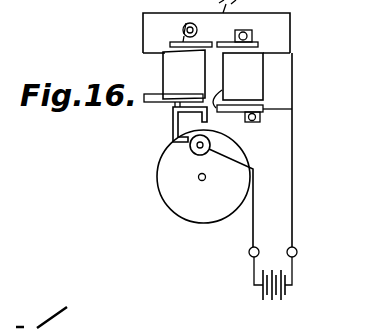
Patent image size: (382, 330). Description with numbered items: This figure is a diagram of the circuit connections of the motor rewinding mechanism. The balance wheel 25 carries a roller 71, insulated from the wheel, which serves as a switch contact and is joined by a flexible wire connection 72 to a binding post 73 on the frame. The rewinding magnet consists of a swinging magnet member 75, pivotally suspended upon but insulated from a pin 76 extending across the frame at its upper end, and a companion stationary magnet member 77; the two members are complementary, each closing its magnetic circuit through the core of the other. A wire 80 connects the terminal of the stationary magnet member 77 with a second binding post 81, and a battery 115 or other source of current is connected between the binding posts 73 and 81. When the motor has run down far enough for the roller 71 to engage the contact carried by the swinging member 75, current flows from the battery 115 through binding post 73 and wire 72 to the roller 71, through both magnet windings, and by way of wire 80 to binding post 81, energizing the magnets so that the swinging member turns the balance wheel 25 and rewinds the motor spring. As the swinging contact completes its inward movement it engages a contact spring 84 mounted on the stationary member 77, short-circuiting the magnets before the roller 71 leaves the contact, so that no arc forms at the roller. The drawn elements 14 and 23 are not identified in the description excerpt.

The armature hook 14 is at (173, 122).
The pin 23 is at (201, 180).
The balance wheel 25 is at (160, 185).
The roller 71 is at (211, 141).
The flexible wire connection 72 is at (254, 224).
The binding post 73 is at (249, 252).
The swinging magnet member 75 is at (163, 76).
The pin 76 is at (197, 28).
The stationary magnet member 77 is at (264, 78).
The wire 80 is at (292, 169).
The binding post 81 is at (297, 252).
The contact spring 84 is at (219, 97).
The battery 115 is at (280, 300).